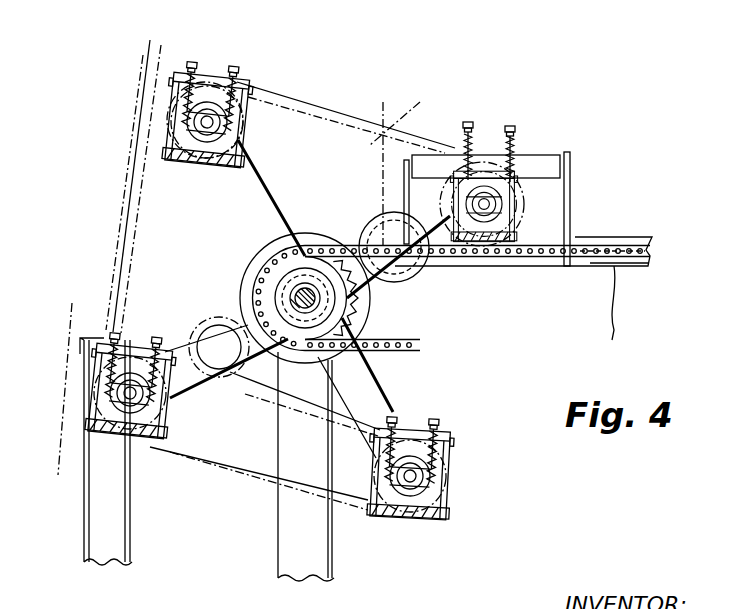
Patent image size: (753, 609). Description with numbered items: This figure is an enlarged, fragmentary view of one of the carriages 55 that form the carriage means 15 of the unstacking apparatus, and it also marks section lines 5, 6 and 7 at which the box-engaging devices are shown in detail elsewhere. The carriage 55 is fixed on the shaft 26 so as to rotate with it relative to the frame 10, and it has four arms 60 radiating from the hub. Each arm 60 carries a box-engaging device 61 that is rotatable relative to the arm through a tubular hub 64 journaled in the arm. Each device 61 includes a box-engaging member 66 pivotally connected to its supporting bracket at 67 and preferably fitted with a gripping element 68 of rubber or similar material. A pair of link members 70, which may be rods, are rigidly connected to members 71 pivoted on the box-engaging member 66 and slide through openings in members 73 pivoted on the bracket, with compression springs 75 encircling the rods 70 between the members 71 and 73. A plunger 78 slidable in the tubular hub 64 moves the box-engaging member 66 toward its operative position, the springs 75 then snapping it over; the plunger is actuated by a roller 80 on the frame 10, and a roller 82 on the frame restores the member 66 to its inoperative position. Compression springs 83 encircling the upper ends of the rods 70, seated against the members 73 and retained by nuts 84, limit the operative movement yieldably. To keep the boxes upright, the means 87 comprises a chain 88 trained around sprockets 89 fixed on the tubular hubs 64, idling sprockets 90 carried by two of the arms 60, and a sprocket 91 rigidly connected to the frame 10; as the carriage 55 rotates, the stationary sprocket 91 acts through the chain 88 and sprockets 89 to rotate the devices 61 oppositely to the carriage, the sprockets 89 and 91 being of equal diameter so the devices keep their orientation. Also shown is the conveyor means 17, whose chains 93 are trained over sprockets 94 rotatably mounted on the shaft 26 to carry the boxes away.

The section line 5- 5 is at (97, 300).
The section line 6- 6 is at (174, 39).
The section line 7- 7 is at (400, 102).
The frame 10 is at (106, 556).
The carriage means 15 is at (355, 97).
The conveyor means 17 is at (617, 237).
The shaft 26 is at (298, 294).
The carriage 55 is at (299, 232).
The arm 60 is at (264, 183).
The box-engaging device 61 is at (219, 59).
The tubular hub 64 is at (160, 127).
The box-engaging member 66 is at (136, 452).
The pivot 67 is at (175, 443).
The gripping element 68 is at (192, 160).
The link member 70 is at (178, 72).
The member 71 is at (98, 420).
The member 73 is at (545, 152).
The compression spring 75 is at (182, 90).
The plunger 78 is at (214, 160).
The roller 80 is at (92, 342).
The roller 82 is at (425, 162).
The compression spring 83 is at (196, 76).
The nut 84 is at (190, 60).
The means for maintaining the boxes upright 87 is at (308, 106).
The chain 88 is at (403, 116).
The sprocket 89 is at (248, 130).
The idling sprocket 90 is at (398, 282).
The sprocket 91 is at (322, 243).
The chain 93 is at (572, 262).
The sprocket 94 is at (372, 327).